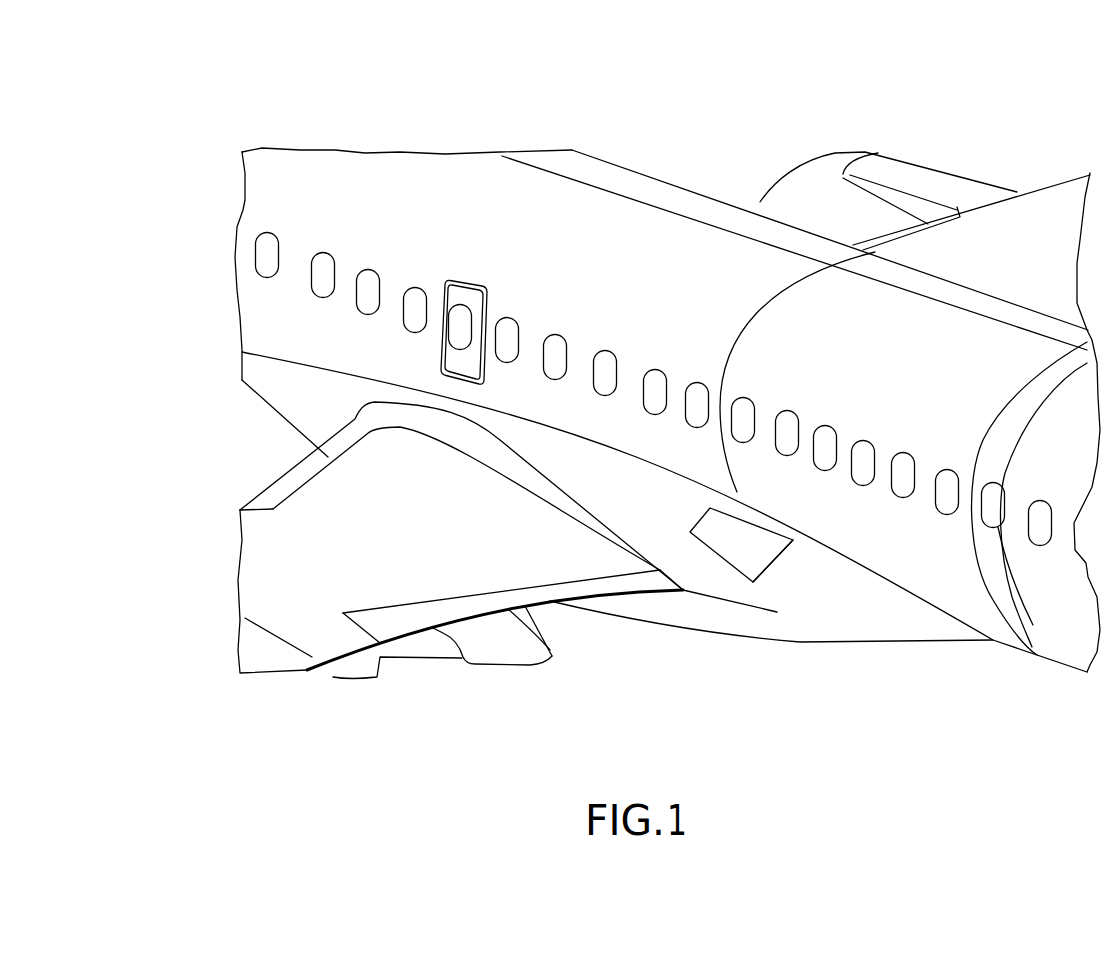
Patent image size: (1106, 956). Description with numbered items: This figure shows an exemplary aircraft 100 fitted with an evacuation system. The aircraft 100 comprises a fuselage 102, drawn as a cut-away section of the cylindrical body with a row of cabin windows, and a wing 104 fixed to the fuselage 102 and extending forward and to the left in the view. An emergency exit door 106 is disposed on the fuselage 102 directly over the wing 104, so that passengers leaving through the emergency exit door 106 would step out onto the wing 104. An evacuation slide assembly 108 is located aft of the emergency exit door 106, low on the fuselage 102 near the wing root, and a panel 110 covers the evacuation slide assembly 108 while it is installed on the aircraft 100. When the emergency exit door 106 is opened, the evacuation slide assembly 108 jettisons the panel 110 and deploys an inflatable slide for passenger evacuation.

The aircraft 100 is at (181, 131).
The fuselage 102 is at (265, 320).
The wing 104 is at (450, 528).
The emergency exit door 106 is at (453, 277).
The evacuation slide assembly 108 is at (773, 560).
The panel 110 is at (757, 560).